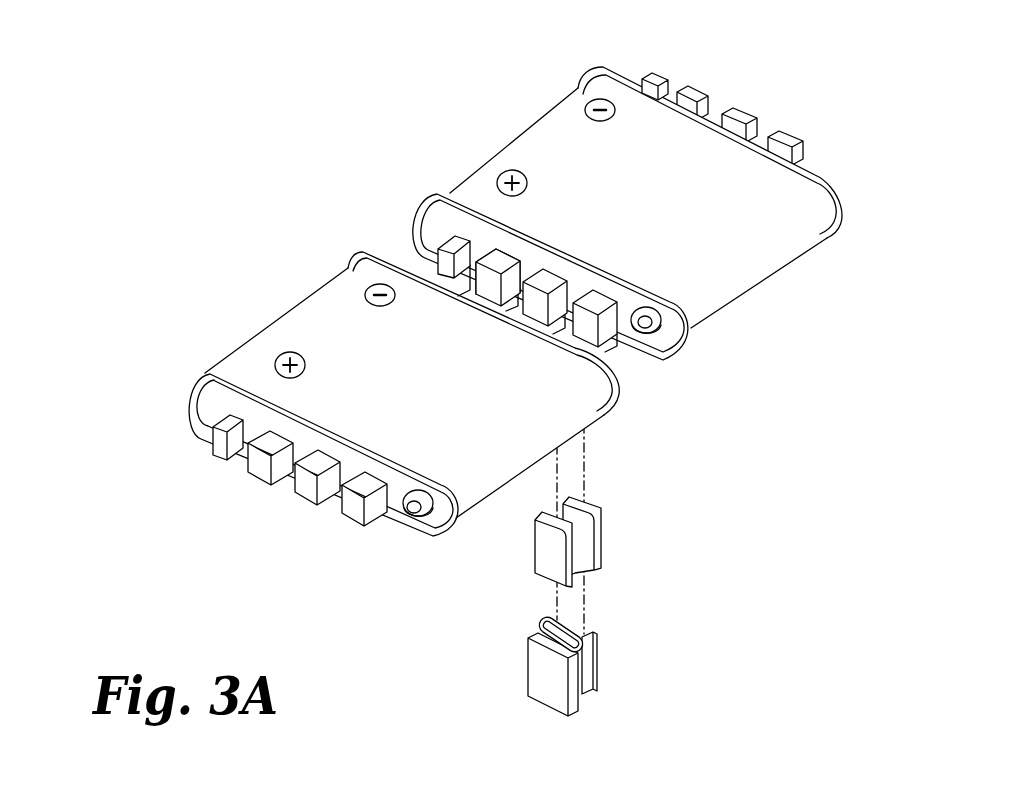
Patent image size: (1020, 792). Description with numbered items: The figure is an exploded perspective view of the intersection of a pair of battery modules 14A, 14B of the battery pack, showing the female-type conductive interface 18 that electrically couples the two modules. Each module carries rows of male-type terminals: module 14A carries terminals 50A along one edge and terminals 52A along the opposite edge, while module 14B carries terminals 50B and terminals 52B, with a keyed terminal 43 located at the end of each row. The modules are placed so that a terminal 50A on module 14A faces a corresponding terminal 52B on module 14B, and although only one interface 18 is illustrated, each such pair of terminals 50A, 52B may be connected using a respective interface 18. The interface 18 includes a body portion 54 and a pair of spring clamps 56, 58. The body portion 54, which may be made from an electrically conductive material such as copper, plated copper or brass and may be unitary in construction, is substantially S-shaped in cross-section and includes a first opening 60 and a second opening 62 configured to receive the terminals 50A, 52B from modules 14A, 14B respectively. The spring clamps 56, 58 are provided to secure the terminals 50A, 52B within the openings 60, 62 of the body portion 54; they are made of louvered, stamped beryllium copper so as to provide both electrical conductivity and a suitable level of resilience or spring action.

The battery module 14A is at (333, 310).
The battery module 14B is at (565, 133).
The keying connector 43 is at (652, 72).
The terminal 50A is at (513, 307).
The second board connectors 50B is at (778, 136).
The first board front connectors 52A is at (350, 512).
The terminal 52B is at (587, 293).
The conductive interface 18 is at (602, 631).
The body portion 54 is at (550, 693).
The spring clamp 56 is at (537, 560).
The spring clamp 58 is at (598, 507).
The first opening 60 is at (528, 639).
The second opening 62 is at (597, 630).